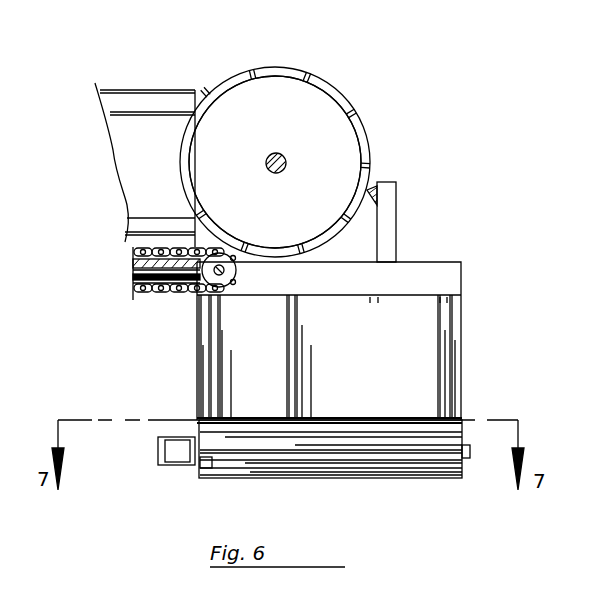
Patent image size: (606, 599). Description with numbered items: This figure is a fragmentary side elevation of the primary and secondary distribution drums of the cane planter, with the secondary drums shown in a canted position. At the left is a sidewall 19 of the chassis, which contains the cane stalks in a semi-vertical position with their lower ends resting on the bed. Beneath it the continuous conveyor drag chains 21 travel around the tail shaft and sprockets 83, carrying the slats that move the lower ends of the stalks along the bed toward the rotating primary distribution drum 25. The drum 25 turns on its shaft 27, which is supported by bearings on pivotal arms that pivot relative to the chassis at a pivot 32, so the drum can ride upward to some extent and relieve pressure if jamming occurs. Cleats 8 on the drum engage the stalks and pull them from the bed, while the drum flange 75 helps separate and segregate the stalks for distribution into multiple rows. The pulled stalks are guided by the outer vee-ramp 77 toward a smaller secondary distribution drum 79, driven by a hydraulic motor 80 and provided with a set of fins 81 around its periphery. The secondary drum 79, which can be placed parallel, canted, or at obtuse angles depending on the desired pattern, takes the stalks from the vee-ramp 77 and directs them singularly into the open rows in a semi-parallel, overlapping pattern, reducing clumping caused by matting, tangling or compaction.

The cleats 8 is at (308, 76).
The sidewall 19 is at (150, 133).
The continuous conveyor drag chains 21 is at (135, 300).
The primary distribution drum 25 is at (287, 225).
The drum shaft 27 is at (276, 153).
The pivot 32 is at (372, 186).
The drum flange 75 is at (333, 94).
The outer vee-ramp 77 is at (420, 360).
The secondary distribution drum 79 is at (205, 462).
The hydraulic motor 80 is at (175, 463).
The fins 81 is at (385, 480).
The tail shaft and sprockets 83 is at (195, 238).